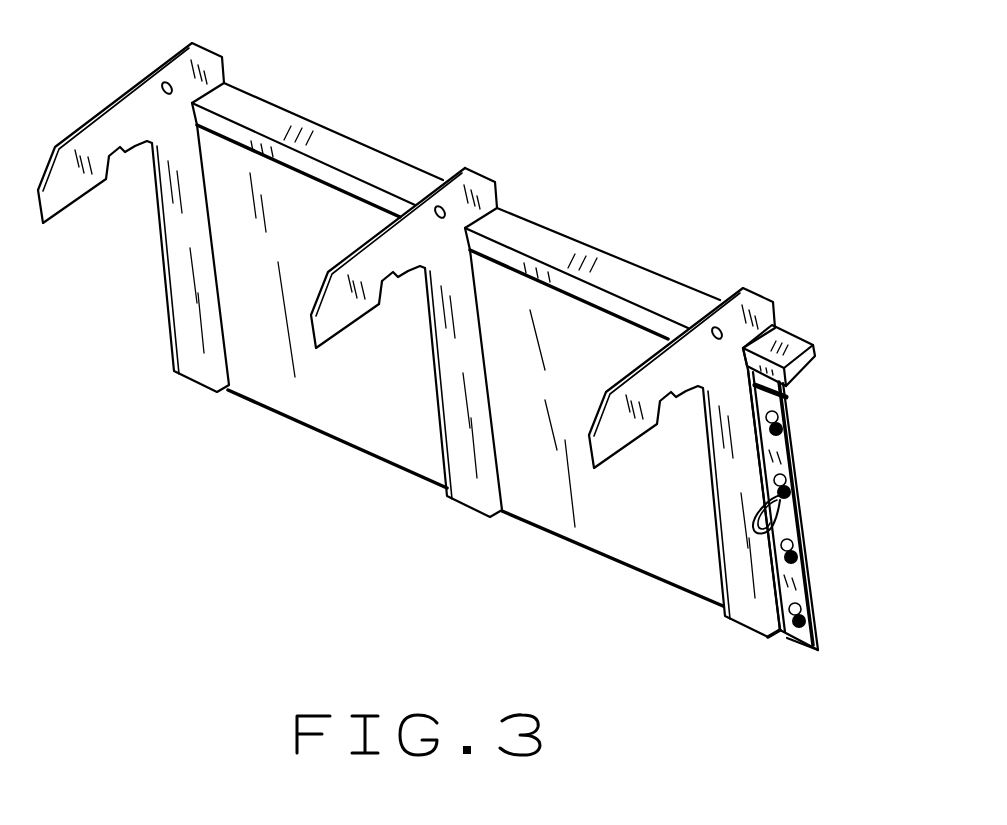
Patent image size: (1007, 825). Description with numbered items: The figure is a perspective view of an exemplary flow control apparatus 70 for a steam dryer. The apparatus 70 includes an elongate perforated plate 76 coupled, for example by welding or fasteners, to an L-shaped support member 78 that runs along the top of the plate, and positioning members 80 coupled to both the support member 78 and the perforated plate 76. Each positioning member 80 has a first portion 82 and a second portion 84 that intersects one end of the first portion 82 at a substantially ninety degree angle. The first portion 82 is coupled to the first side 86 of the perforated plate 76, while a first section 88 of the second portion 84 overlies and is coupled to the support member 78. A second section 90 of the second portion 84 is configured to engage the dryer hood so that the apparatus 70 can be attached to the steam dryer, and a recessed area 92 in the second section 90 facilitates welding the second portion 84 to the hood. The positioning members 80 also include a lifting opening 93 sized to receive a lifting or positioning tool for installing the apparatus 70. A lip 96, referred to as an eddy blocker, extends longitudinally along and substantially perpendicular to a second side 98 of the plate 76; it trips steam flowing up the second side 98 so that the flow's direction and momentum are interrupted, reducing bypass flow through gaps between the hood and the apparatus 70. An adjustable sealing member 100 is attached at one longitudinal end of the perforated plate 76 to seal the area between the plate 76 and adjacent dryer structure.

The flow control apparatus 70 is at (622, 173).
The elongate perforated plate 76 is at (300, 424).
The support member 78 is at (592, 248).
The positioning members 80 is at (205, 46).
The first portion 82 is at (446, 383).
The second portion 84 is at (384, 258).
The front face of panel 86 is at (612, 527).
The first section 88 is at (474, 174).
The second section 90 is at (360, 332).
The recessed area 92 is at (403, 303).
The lifting opening 93 is at (168, 80).
The lip 96 is at (790, 399).
The second side 98 is at (800, 461).
The adjustable sealing member 100 is at (813, 523).